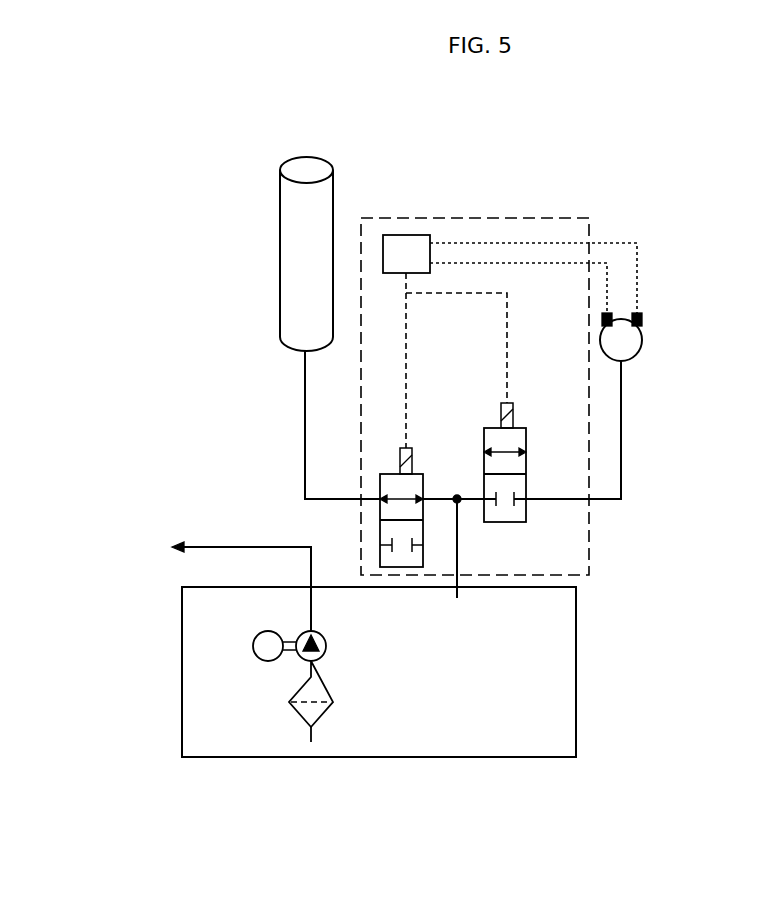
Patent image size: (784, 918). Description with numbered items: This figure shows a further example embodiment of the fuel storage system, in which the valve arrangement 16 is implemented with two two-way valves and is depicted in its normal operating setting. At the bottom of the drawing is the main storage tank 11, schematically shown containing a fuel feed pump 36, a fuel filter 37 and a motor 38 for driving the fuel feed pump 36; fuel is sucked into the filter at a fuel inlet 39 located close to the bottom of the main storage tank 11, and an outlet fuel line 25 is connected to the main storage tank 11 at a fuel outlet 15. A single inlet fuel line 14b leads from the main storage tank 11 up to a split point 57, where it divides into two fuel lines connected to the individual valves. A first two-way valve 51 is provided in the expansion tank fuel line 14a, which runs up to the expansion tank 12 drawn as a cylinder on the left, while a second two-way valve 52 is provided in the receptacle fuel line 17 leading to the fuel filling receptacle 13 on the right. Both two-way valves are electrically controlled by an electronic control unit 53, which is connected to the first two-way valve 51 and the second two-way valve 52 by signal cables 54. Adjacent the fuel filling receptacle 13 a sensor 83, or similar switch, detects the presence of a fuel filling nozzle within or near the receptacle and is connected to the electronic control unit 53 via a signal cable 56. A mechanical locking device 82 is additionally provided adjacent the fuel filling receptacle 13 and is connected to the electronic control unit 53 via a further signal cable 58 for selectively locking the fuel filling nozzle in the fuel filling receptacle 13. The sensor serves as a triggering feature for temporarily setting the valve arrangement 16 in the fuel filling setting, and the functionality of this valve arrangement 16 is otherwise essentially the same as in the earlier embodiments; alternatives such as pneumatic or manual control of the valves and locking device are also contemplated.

The accumulator cylinder 12 is at (323, 198).
The electronic control unit 53 is at (417, 250).
The signal cables 54 is at (453, 293).
The valve arrangement 16 is at (572, 218).
The further signal cable 58 is at (607, 262).
The signal cable 56 is at (638, 245).
The mechanical locking device 82 is at (613, 313).
The sensor 83 is at (642, 314).
The fuel filling receptacle 13 is at (642, 335).
The receptacle fuel line 17 is at (622, 437).
The expansion tank fuel line 14a is at (305, 445).
The first two-way valve 51 is at (390, 515).
The second two-way valve 52 is at (513, 515).
The split point 57 is at (457, 499).
The single inlet fuel line 14b is at (500, 589).
The outlet fuel line 25 is at (198, 548).
The main storage tank 11 is at (220, 730).
The motor 38 is at (270, 656).
The fuel inlet 39 is at (312, 738).
The fuel filter 37 is at (317, 712).
The fuel feed pump 36 is at (318, 656).
The fuel outlet 15 is at (320, 588).